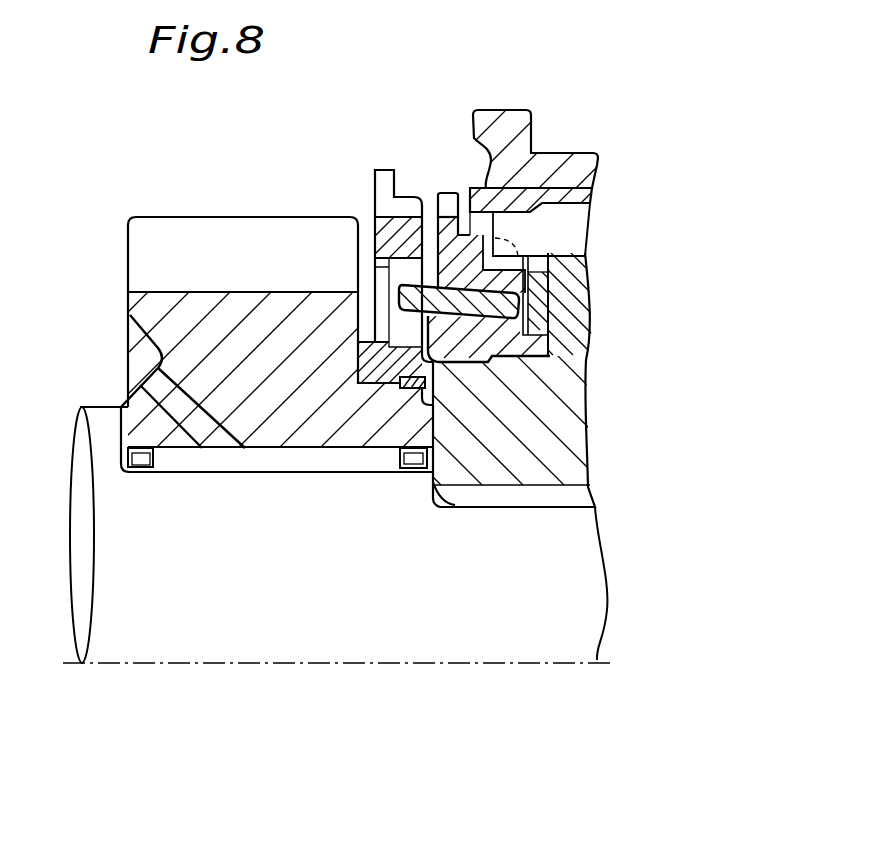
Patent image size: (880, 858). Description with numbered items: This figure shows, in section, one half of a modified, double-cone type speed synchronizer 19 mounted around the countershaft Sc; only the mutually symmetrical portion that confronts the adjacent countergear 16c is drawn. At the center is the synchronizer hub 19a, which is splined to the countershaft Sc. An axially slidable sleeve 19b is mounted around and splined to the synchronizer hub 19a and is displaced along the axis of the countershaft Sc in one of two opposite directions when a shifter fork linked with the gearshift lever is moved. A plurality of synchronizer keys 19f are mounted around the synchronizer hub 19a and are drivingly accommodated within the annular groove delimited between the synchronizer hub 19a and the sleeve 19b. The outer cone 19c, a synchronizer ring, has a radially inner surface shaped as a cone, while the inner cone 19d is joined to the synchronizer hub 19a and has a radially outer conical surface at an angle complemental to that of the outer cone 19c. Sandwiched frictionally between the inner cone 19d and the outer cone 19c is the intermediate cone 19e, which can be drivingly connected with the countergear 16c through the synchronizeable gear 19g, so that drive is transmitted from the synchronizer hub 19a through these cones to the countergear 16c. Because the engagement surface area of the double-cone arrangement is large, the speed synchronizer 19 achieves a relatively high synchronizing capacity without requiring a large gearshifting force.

The hub inner member 16c is at (240, 313).
The speed synchronizer 19 is at (499, 455).
The synchronizer hub 19a is at (567, 430).
The sleeve 19b is at (548, 170).
The outer cone 19c is at (450, 228).
The inner cone 19d is at (460, 343).
The intermediate cone 19e is at (440, 307).
The synchronizer key 19f is at (568, 236).
The synchronizeable gear 19g is at (390, 232).
The countershaft Sc is at (370, 637).